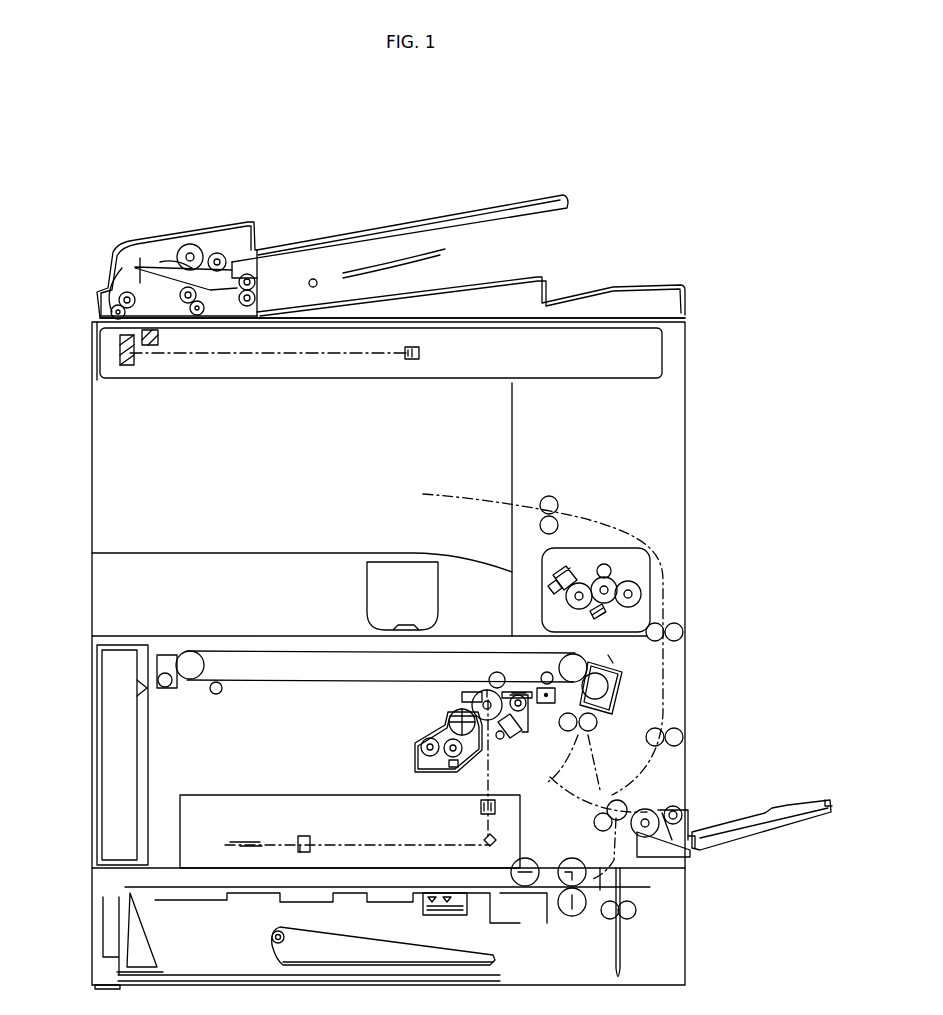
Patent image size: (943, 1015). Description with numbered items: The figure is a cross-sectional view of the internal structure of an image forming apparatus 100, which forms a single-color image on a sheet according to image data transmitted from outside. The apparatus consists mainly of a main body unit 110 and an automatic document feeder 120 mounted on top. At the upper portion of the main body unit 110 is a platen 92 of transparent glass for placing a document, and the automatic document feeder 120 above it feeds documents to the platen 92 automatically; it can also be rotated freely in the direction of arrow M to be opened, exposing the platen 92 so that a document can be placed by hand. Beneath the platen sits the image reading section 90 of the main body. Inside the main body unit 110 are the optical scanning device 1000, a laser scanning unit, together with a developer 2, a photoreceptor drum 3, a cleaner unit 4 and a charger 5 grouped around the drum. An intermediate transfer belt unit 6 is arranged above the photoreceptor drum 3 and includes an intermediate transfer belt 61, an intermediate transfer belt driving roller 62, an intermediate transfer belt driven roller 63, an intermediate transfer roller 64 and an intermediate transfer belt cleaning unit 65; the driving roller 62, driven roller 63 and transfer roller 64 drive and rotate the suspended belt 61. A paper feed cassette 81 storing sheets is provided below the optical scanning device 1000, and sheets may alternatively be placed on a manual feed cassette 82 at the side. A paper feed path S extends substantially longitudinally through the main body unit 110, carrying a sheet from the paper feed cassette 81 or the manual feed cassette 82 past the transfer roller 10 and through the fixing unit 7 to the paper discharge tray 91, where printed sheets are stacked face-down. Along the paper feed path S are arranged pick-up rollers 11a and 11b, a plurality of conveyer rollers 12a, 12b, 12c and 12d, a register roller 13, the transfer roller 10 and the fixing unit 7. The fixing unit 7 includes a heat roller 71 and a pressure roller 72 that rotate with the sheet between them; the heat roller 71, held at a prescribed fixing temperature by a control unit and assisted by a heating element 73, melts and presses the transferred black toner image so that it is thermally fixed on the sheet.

The image forming apparatus 100 is at (684, 260).
The main body unit 110 is at (92, 523).
The automatic document feeder 120 is at (212, 225).
The image reading unit 90 is at (665, 355).
The paper discharge tray 91 is at (300, 553).
The platen 92 is at (470, 318).
The arrow M is at (398, 182).
The paper feed path S is at (543, 687).
The optical scanning device 1000 is at (520, 817).
The developer 2 is at (432, 732).
The photoreceptor drum 3 is at (487, 690).
The cleaner unit 4 is at (524, 712).
The charger 5 is at (514, 738).
The intermediate transfer belt unit 6 is at (327, 651).
The intermediate transfer belt 61 is at (492, 645).
The intermediate transfer belt driving roller 62 is at (580, 660).
The intermediate transfer belt driven roller 63 is at (160, 662).
The intermediate transfer roller 64 is at (503, 675).
The intermediate transfer belt cleaning unit 65 is at (172, 684).
The fixing unit 7 is at (634, 567).
The heat roller 71 is at (612, 582).
The pressure roller 72 is at (640, 594).
The heating unit 73 is at (598, 566).
The transfer roller 10 is at (600, 685).
The pick-up roller 11a is at (527, 866).
The pick-up roller 11b is at (682, 815).
The conveyer roller 12a is at (650, 800).
The conveyer roller 12b is at (552, 497).
The conveyer roller 12c is at (682, 633).
The conveyer roller 12d is at (682, 737).
The register roller 13 is at (594, 724).
The paper feed cassette 81 is at (345, 945).
The manual feed cassette 82 is at (777, 803).